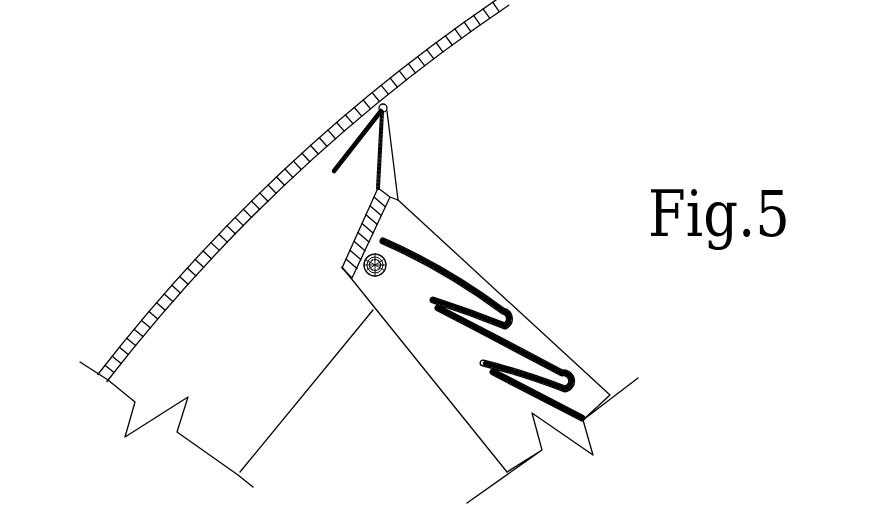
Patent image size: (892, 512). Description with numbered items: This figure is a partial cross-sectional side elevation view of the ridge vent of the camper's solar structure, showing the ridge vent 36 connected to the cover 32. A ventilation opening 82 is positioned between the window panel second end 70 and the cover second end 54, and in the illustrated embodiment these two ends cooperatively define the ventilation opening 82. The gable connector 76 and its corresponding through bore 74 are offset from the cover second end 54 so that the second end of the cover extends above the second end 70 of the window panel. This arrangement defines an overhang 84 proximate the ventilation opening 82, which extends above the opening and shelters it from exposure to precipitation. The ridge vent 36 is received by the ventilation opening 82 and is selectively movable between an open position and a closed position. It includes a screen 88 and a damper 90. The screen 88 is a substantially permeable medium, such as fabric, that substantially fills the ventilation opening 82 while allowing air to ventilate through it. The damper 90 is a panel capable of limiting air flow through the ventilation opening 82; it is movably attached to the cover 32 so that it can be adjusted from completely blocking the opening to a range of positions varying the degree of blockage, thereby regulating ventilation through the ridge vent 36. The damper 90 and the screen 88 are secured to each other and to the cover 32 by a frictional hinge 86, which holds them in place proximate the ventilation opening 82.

The cover 32 is at (219, 235).
The cover second end 54 is at (364, 99).
The overhang 84 is at (479, 27).
The frictional hinge 86 is at (389, 108).
The screen 88 is at (388, 142).
The damper 90 is at (353, 147).
The ventilation opening 82 is at (413, 185).
The ridge vent 36 is at (332, 197).
The gable connector 76 is at (350, 248).
The through bore 74 is at (361, 292).
The window panel second end 70 is at (405, 343).